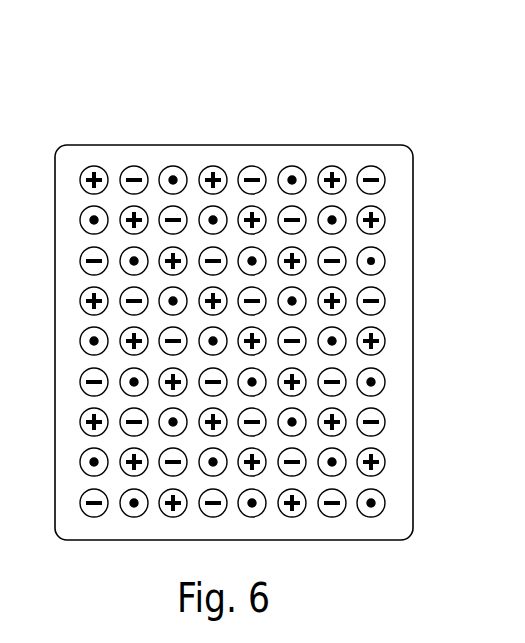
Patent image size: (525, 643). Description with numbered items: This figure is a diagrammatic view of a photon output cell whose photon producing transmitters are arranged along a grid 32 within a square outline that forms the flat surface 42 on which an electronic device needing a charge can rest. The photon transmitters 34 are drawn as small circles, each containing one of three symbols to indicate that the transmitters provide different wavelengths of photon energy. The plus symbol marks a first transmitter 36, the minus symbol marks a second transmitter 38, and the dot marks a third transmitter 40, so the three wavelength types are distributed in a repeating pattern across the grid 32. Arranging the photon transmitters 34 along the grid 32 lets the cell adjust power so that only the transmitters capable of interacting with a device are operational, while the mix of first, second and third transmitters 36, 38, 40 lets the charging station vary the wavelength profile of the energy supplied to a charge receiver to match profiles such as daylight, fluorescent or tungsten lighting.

The grid 32 is at (236, 285).
The photon transmitter 34 is at (372, 264).
The first transmitter 36 is at (373, 216).
The second transmitter 38 is at (364, 301).
The third transmitter 40 is at (372, 261).
The flat surface 42 is at (65, 317).